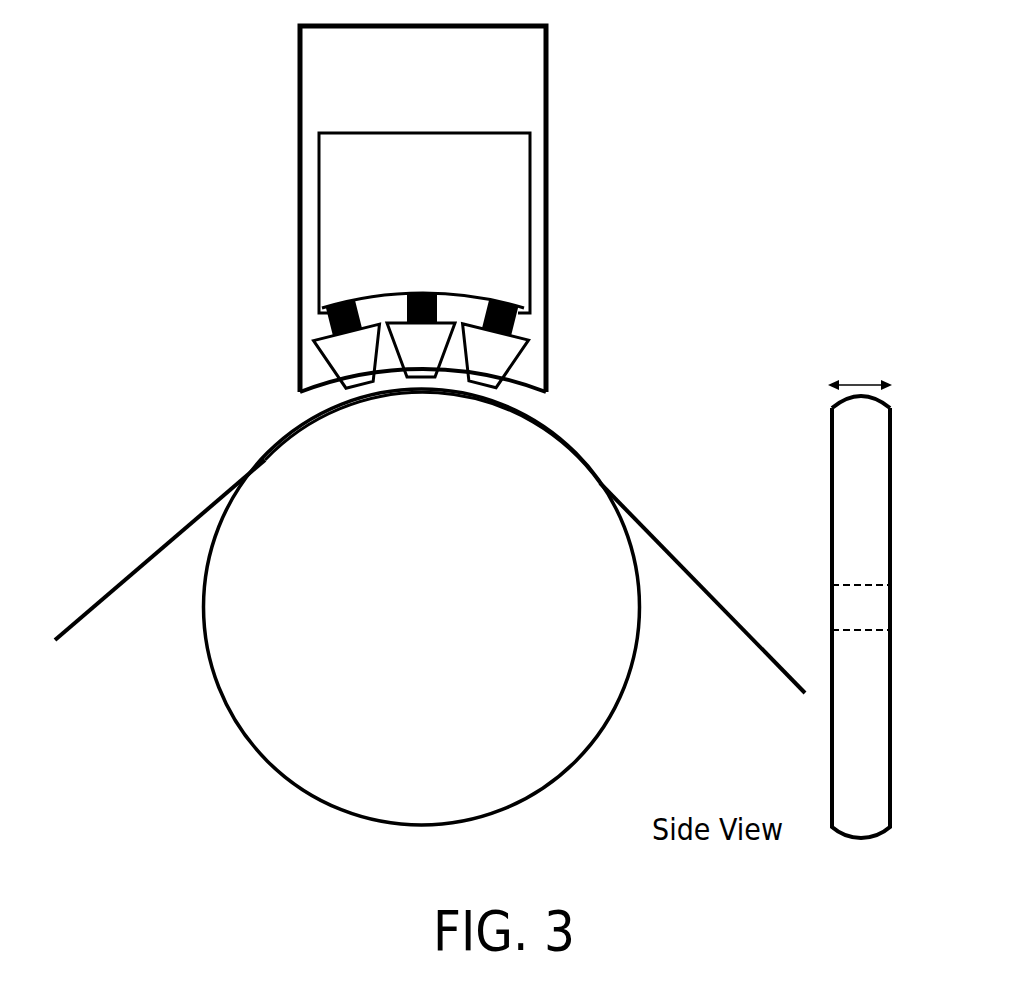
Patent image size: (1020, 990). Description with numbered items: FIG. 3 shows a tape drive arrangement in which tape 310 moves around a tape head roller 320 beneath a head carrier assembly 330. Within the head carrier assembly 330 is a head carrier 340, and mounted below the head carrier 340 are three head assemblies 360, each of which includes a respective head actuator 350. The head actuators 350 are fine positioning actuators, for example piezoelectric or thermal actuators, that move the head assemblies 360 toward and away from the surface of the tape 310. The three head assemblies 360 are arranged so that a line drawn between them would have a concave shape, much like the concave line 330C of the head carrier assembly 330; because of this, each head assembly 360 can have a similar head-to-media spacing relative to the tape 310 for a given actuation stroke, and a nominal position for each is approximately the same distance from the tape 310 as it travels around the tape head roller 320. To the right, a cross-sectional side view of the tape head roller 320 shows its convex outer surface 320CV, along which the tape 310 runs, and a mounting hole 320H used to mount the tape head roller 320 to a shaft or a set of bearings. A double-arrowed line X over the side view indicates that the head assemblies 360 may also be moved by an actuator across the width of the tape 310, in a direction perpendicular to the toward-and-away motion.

The tape 310 is at (763, 653).
The tape head roller 320 is at (832, 708).
The convex outer surface 320CV is at (830, 402).
The mounting hole 320H is at (855, 585).
The head carrier assembly 330 is at (298, 80).
The concave line of head carrier assembly 330C is at (525, 381).
The head carrier 340 is at (424, 223).
The head actuator 350 is at (333, 318).
The head assembly 360 is at (521, 355).